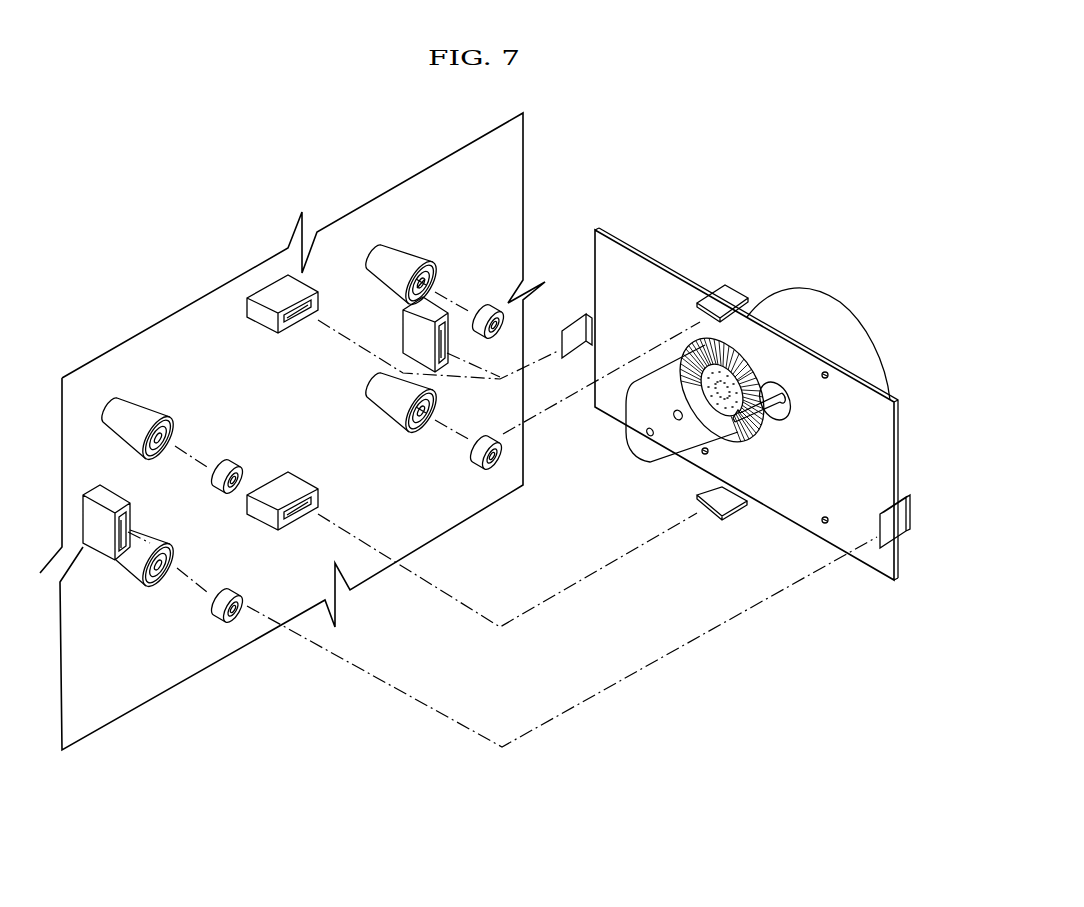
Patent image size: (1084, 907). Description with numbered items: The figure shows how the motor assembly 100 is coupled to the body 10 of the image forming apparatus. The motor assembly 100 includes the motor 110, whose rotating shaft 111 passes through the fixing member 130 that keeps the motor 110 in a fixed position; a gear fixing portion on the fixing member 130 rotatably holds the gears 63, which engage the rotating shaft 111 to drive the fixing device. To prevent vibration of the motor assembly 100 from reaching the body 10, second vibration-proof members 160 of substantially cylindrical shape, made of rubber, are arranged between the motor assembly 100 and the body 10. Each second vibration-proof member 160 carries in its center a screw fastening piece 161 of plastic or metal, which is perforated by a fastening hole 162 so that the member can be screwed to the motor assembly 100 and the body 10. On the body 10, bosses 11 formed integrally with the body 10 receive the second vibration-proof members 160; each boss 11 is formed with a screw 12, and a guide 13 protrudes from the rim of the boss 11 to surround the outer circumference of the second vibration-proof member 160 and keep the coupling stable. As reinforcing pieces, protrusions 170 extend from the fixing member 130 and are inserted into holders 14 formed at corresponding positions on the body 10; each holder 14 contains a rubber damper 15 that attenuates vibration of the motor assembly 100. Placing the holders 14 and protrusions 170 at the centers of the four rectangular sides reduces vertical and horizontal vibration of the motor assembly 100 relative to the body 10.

The body 10 is at (150, 350).
The boss 11 is at (405, 252).
The screw 12 is at (427, 291).
The guide 13 is at (425, 278).
The holder 14 is at (278, 293).
The rubber damper 15 is at (293, 325).
The gears 63 is at (657, 388).
The motor assembly 100 is at (797, 144).
The motor 110 is at (812, 300).
The rotating shaft 111 is at (762, 420).
The fixing member 130 is at (618, 260).
The second vibration-proof member 160 is at (474, 462).
The screw fastening piece 161 is at (500, 452).
The fastening hole 162 is at (505, 465).
The protrusion 170 is at (573, 322).